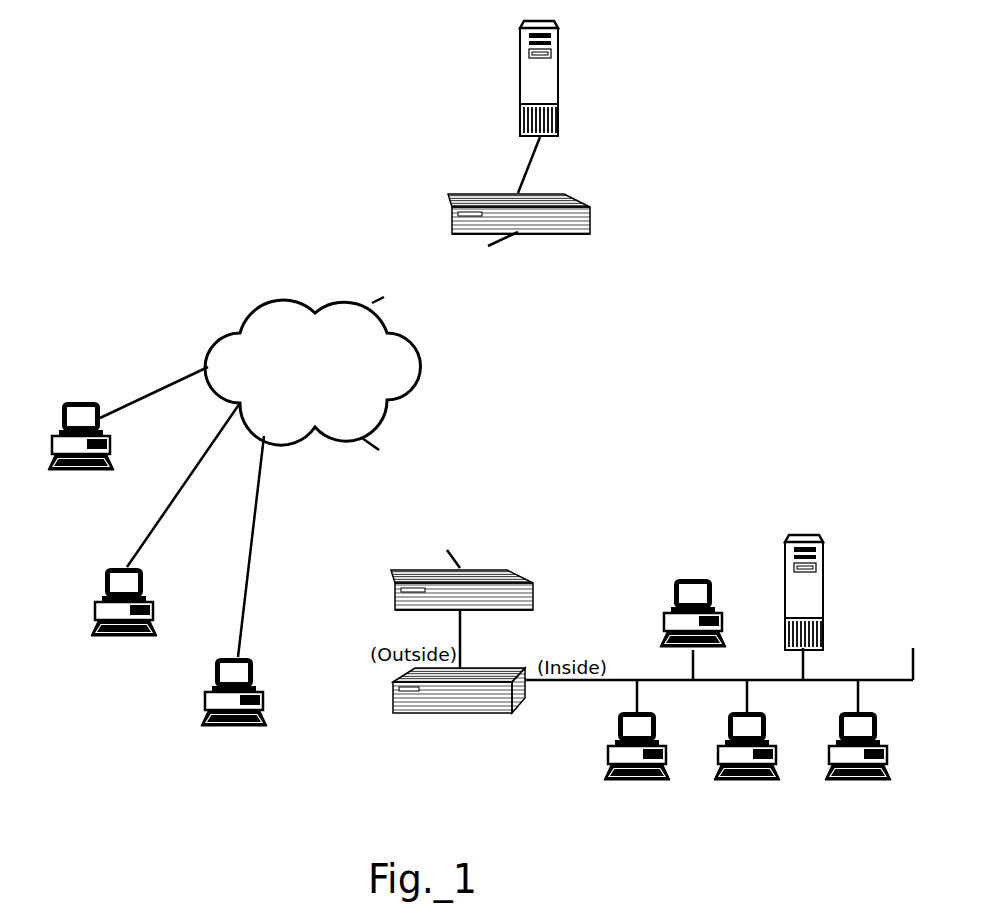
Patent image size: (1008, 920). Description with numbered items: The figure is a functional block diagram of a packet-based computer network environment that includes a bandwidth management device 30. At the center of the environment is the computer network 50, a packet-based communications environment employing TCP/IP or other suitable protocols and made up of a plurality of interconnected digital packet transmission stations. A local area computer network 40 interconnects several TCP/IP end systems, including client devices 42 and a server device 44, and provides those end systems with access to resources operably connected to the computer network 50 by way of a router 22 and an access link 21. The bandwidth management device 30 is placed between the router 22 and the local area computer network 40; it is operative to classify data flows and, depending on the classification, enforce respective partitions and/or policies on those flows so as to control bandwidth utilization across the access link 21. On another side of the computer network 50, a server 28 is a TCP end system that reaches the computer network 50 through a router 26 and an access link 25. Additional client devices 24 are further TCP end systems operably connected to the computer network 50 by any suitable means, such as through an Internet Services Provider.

The access link 21 is at (453, 557).
The router 22 is at (497, 569).
The client devices 24 is at (78, 470).
The access link 25 is at (500, 243).
The router 26 is at (552, 233).
The server 28 is at (560, 77).
The bandwidth management device 30 is at (493, 713).
The local area computer network 40 is at (913, 648).
The client devices 42 is at (692, 578).
The server device 44 is at (810, 532).
The computer network 50 is at (267, 302).